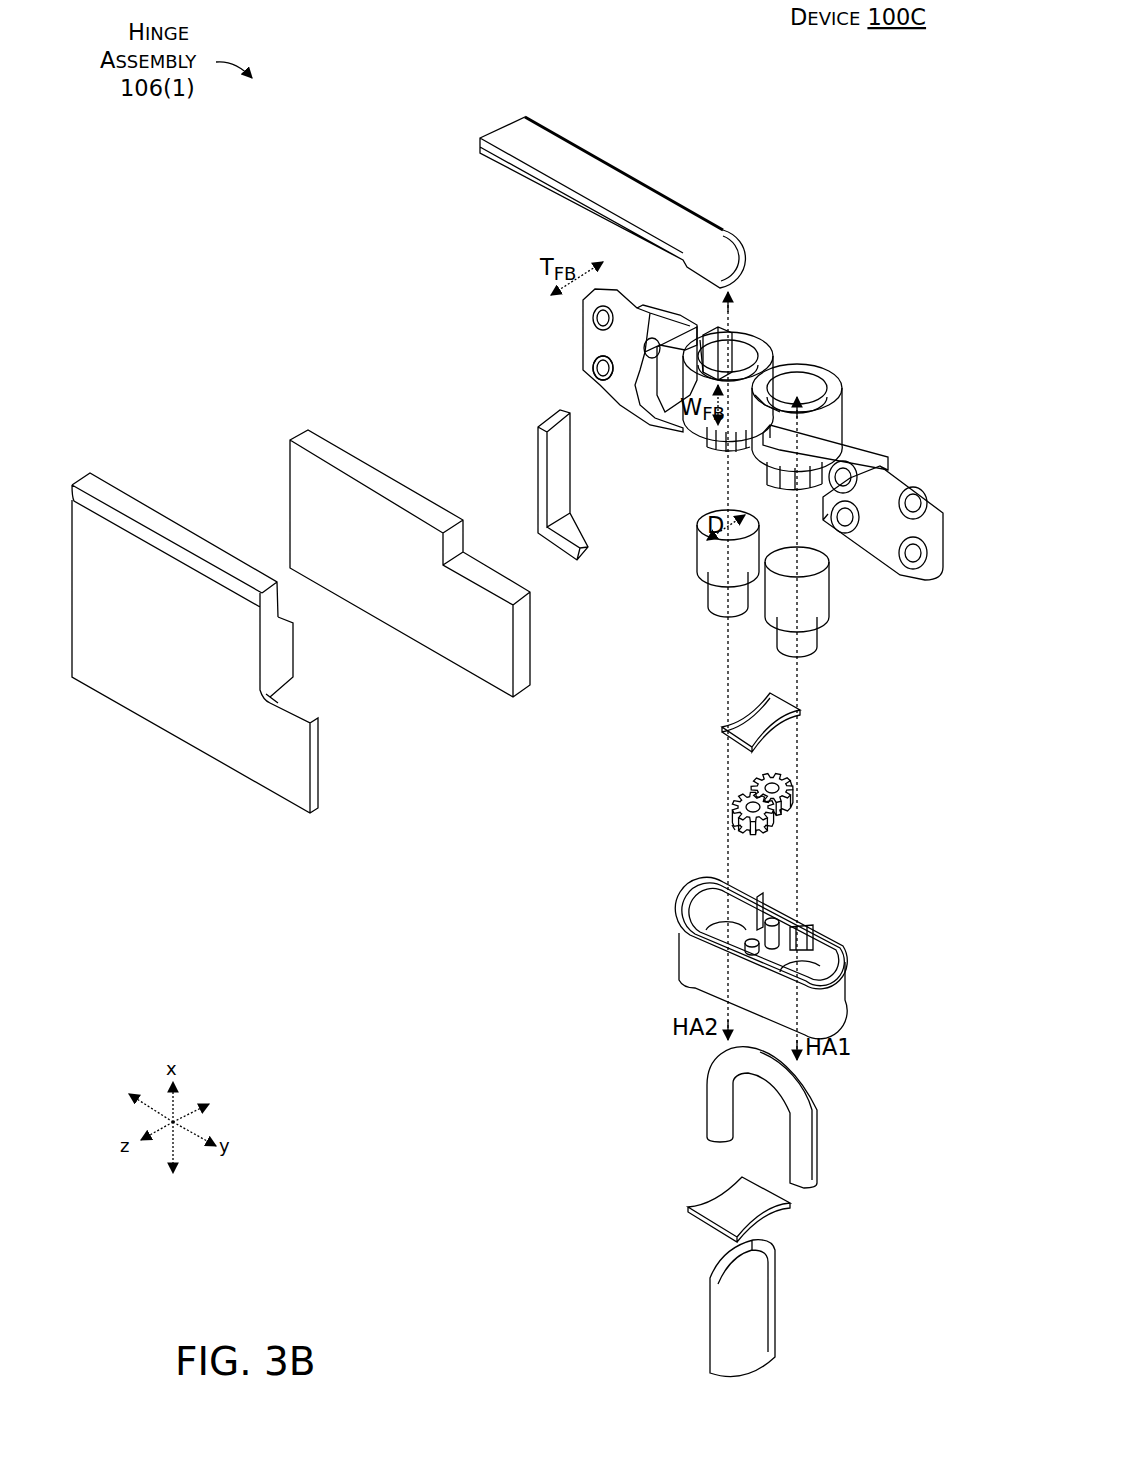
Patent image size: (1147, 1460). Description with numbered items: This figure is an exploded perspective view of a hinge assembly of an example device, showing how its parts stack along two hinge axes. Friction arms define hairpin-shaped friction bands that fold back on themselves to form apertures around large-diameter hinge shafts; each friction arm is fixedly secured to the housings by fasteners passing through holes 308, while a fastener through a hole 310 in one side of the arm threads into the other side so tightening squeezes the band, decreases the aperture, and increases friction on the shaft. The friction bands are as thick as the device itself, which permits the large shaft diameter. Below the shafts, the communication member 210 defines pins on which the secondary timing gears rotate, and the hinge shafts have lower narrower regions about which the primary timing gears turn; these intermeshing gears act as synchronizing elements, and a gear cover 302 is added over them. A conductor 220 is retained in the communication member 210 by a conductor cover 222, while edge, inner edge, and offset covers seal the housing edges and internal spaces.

The communication member 210 is at (847, 978).
The conductor 220 is at (706, 1110).
The conductor cover 222 is at (788, 1208).
The gear cover 302 is at (722, 727).
The hole 308 is at (592, 366).
The hole 310 is at (644, 350).